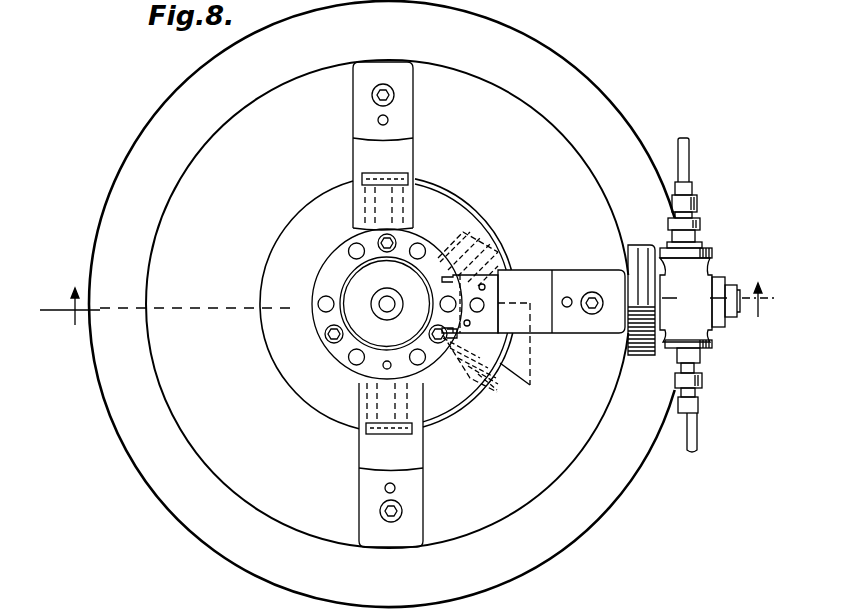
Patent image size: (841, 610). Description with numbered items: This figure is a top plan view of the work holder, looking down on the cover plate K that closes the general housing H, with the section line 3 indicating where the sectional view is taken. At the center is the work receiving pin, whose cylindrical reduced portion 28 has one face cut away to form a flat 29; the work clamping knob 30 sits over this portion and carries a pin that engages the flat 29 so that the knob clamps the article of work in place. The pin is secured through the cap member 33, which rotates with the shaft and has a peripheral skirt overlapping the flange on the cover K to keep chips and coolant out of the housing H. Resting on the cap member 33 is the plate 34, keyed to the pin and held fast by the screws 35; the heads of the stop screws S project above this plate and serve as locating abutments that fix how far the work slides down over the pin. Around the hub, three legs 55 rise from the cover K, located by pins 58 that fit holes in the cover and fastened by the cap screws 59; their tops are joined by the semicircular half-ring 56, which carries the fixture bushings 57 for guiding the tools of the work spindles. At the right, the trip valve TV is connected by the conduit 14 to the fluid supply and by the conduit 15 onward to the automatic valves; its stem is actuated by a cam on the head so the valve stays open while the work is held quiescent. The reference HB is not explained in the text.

The section line 3- 3 is at (401, 307).
The conduit 14 is at (689, 163).
The conduit 15 is at (696, 431).
The cylindrical reduced portion 28 is at (387, 312).
The flat 29 is at (414, 303).
The work clamping knob 30 is at (353, 293).
The cap member 33 is at (276, 338).
The plate 34 is at (338, 262).
The screws 35 is at (387, 252).
The legs 55 is at (412, 150).
The semicircular half-ring 56 is at (450, 212).
The fixture bushings 57 is at (365, 177).
The pins 58 is at (388, 120).
The cap screws 59 is at (394, 93).
The stop screws S is at (351, 246).
The cover plate K is at (266, 458).
The housing H is at (520, 500).
The housing band HB is at (610, 487).
The trip valve TV is at (700, 280).